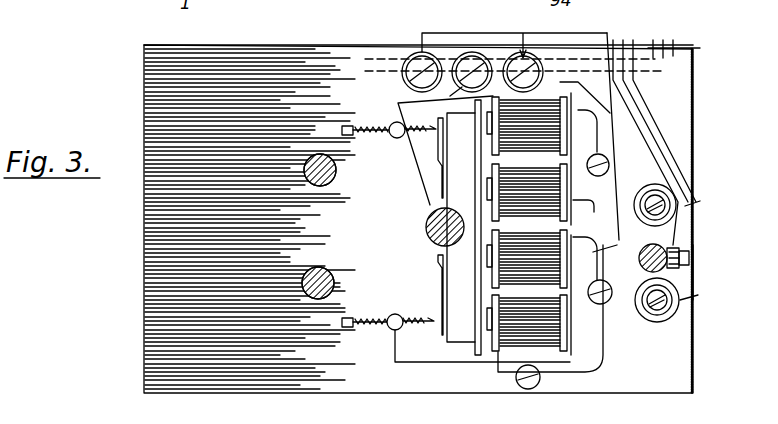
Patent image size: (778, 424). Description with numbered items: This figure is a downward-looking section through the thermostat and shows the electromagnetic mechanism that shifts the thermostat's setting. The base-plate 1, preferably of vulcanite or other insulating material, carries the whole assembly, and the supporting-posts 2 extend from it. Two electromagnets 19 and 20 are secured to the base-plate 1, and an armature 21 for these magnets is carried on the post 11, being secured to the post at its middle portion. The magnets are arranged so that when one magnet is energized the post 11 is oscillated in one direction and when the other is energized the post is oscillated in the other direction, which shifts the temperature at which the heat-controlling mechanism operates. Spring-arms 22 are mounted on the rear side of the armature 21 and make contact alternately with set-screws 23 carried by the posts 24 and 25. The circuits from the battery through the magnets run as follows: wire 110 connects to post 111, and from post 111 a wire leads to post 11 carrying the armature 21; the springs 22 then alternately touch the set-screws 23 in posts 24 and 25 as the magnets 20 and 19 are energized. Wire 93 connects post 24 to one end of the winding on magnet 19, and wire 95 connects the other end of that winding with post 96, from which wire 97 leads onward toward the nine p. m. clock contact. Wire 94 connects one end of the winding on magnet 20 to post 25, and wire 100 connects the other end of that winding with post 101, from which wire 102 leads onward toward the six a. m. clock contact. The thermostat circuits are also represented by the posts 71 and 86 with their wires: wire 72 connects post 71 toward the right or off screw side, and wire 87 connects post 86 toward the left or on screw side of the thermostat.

The base-plate 1 is at (418, 219).
The supporting-posts 2 is at (304, 175).
The post 11 is at (428, 234).
The electromagnet 19 is at (548, 153).
The electromagnet 20 is at (542, 292).
The armature 21 is at (464, 227).
The spring-arms 22 is at (437, 157).
The set-screws 23 is at (374, 136).
The post 24 is at (392, 124).
The post 25 is at (389, 327).
The post 71 is at (654, 196).
The wire 72 is at (688, 180).
The post 86 is at (652, 314).
The wire 87 is at (697, 288).
The wire 93 is at (408, 100).
The wire 94 is at (468, 362).
The wire 95 is at (594, 208).
The post 96 is at (523, 53).
The wire 97 is at (652, 46).
The wire 100 is at (513, 133).
The post 101 is at (416, 64).
The wire 102 is at (676, 48).
The wire 110 is at (664, 46).
The post 111 is at (470, 64).